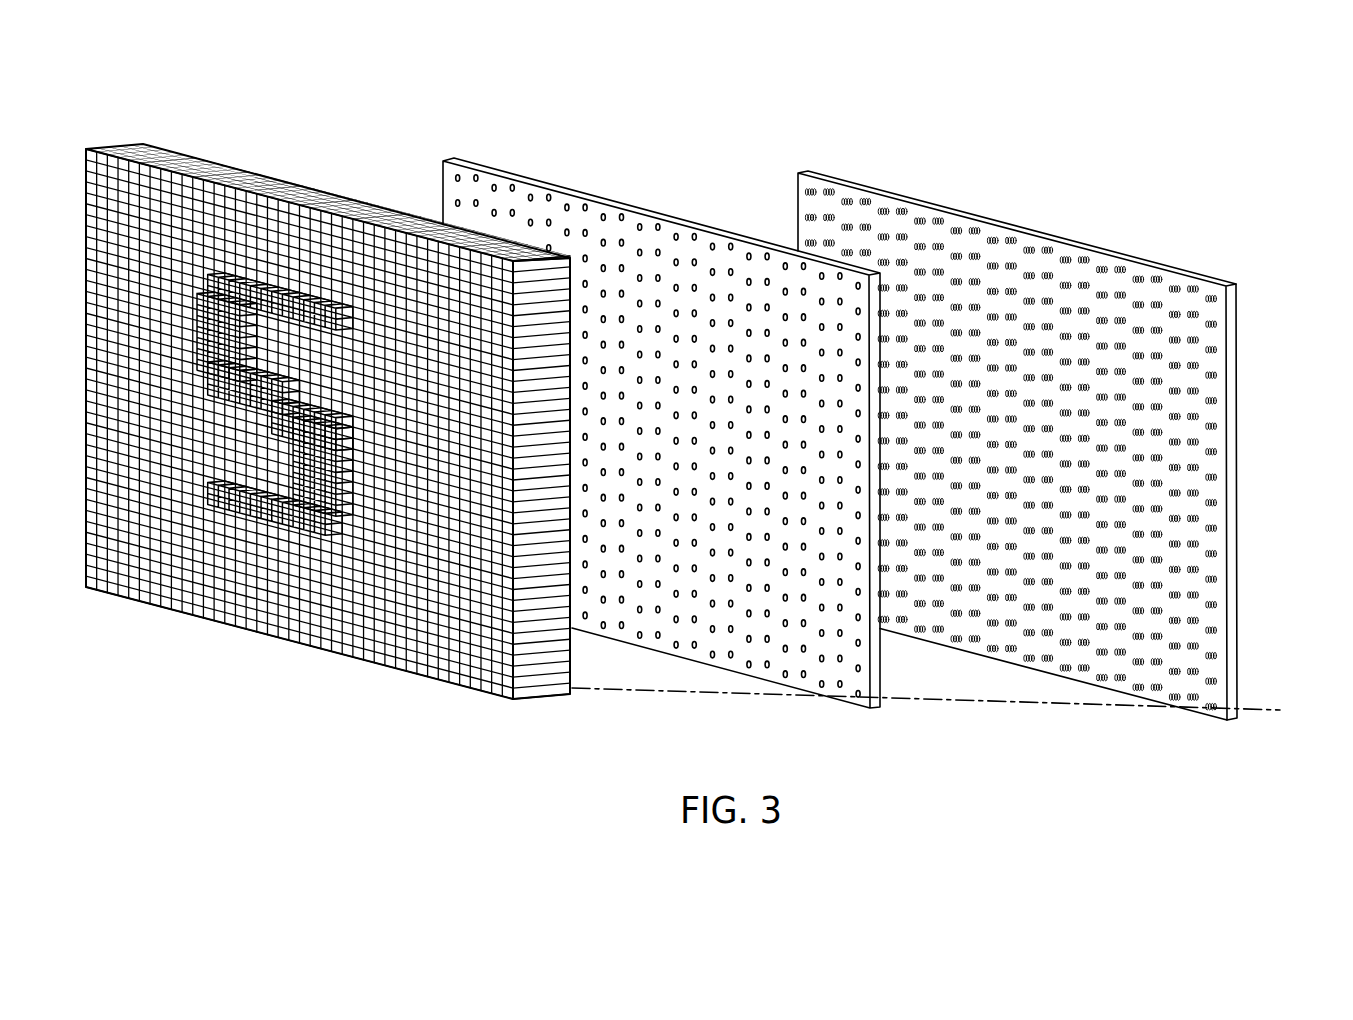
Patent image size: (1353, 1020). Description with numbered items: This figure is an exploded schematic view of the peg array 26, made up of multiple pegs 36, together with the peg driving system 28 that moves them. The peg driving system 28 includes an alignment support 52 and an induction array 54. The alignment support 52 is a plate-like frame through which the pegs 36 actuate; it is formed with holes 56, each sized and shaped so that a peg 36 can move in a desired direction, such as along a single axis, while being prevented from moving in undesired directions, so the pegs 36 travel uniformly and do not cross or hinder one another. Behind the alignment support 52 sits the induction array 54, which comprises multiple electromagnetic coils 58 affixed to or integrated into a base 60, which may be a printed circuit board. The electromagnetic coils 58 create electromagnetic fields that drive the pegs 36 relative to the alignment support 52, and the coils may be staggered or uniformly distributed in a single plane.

The peg array 26 is at (328, 431).
The peg driving system 28 is at (1230, 112).
The pegs 36 is at (544, 672).
The alignment support 52 is at (702, 405).
The induction array 54 is at (1057, 416).
The holes 56 is at (862, 645).
The electromagnetic coils 58 is at (1216, 657).
The base 60 is at (1217, 338).